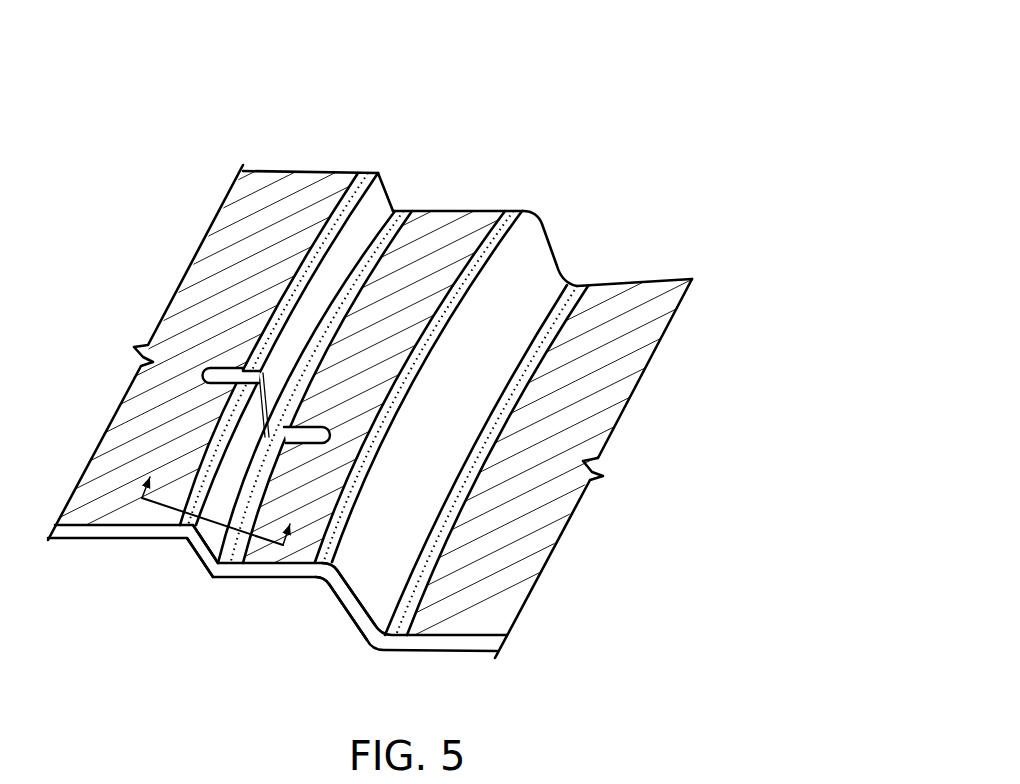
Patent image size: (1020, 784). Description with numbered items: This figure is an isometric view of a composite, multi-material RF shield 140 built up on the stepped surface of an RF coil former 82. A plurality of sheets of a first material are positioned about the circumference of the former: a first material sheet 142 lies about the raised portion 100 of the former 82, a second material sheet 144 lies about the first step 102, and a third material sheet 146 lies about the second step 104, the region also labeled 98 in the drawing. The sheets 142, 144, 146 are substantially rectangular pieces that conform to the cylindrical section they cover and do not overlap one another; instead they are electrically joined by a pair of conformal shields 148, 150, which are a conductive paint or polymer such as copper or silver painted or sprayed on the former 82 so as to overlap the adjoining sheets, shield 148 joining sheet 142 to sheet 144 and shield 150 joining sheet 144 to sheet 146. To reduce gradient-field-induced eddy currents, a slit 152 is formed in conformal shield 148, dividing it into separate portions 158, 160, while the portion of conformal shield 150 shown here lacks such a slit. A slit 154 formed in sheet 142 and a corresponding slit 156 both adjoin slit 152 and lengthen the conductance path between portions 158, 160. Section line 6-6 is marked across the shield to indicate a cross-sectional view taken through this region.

The composite RF shield 140 is at (462, 62).
The raised portion 100 is at (283, 140).
The first step 102 is at (470, 182).
The first skin member 98 is at (595, 408).
The second step 104 is at (486, 423).
The first material sheet 142 is at (233, 207).
The second material sheet 144 is at (487, 222).
The third material sheet 146 is at (657, 303).
The conformal shield 148 is at (206, 564).
The conformal shield 150 is at (365, 577).
The slit 152 is at (262, 368).
The slit 154 is at (238, 368).
The slit 156 is at (312, 427).
The portion of conformal shield 158 is at (318, 345).
The portion of conformal shield 160 is at (223, 438).
The RF coil former 82 is at (240, 576).
The section line 6- 6 is at (221, 497).